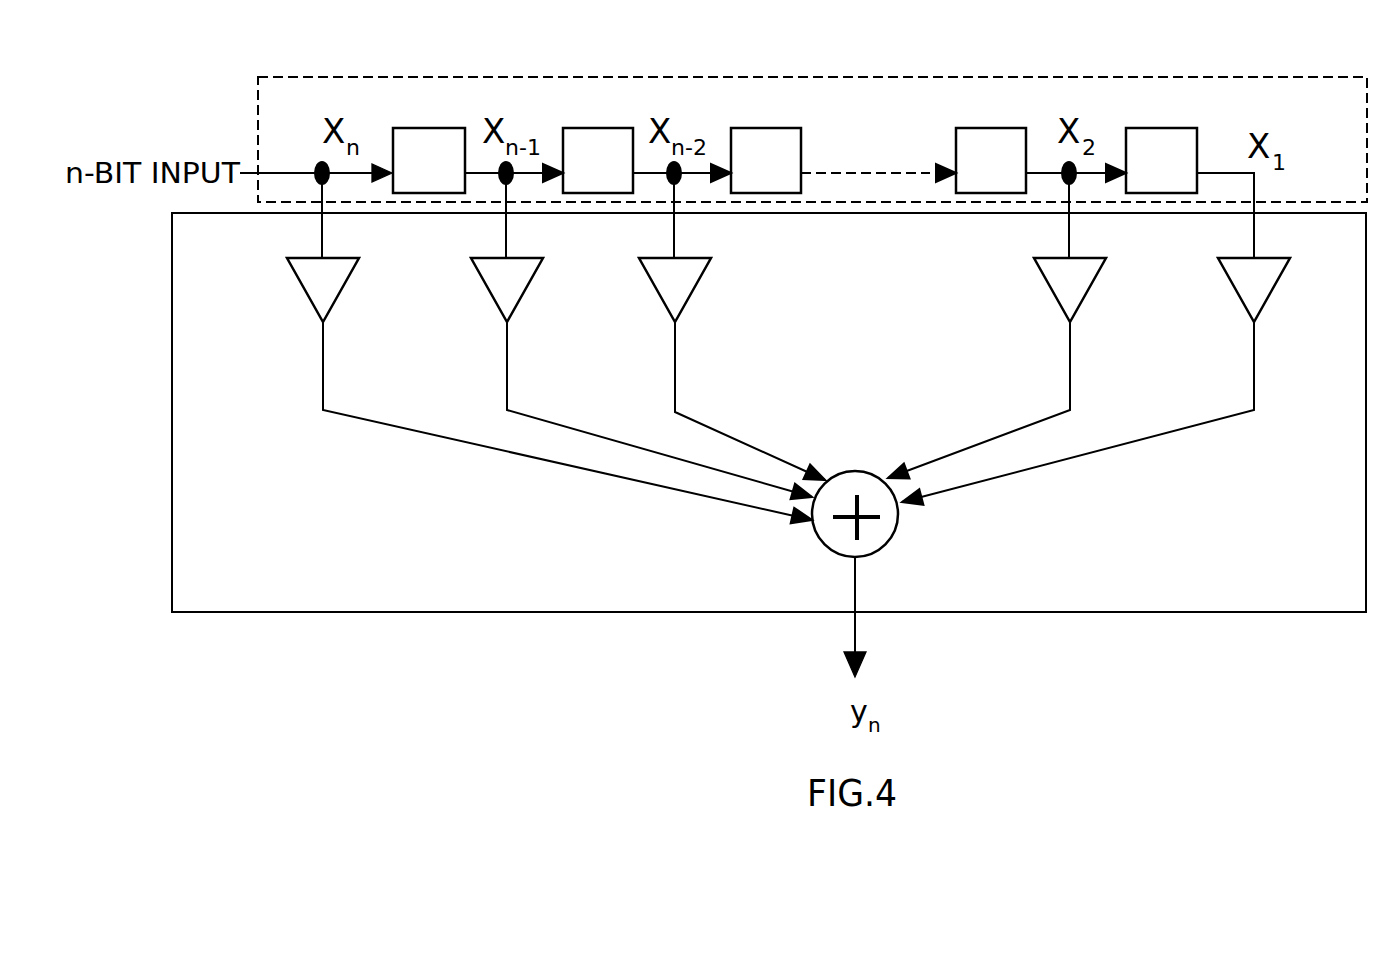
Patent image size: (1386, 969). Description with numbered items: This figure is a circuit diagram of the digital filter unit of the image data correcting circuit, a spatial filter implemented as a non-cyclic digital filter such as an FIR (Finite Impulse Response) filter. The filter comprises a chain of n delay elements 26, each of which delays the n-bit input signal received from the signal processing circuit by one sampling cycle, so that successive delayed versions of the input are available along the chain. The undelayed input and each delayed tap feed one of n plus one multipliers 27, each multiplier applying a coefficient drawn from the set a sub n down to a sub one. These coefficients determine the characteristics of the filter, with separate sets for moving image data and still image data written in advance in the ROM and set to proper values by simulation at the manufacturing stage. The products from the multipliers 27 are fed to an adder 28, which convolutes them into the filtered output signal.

The delay element 26 is at (784, 143).
The multiplier 27 is at (764, 390).
The adder 28 is at (902, 525).